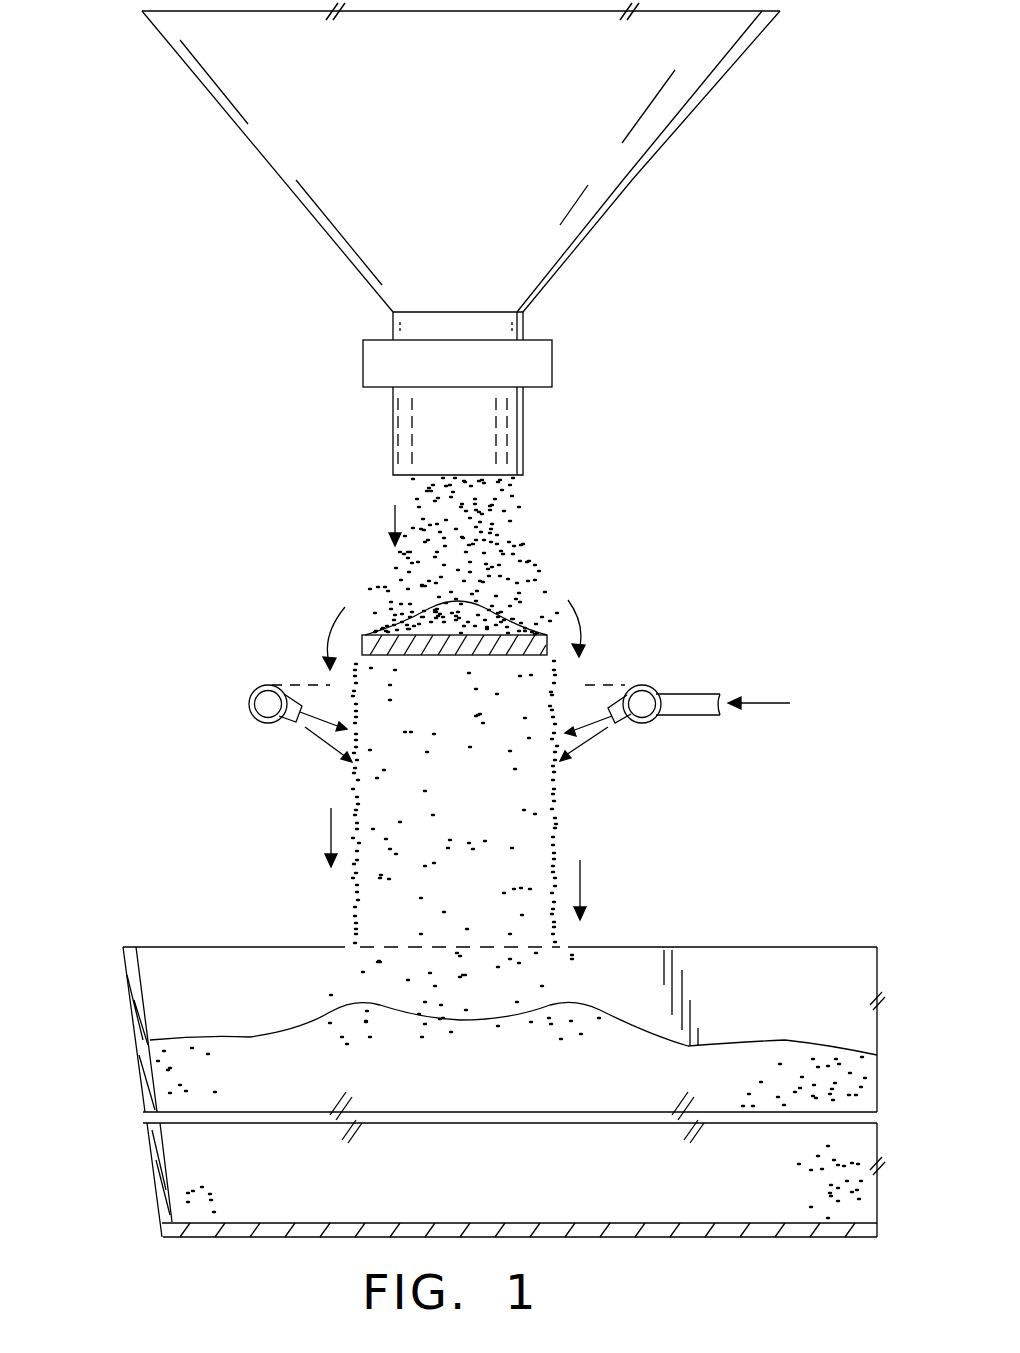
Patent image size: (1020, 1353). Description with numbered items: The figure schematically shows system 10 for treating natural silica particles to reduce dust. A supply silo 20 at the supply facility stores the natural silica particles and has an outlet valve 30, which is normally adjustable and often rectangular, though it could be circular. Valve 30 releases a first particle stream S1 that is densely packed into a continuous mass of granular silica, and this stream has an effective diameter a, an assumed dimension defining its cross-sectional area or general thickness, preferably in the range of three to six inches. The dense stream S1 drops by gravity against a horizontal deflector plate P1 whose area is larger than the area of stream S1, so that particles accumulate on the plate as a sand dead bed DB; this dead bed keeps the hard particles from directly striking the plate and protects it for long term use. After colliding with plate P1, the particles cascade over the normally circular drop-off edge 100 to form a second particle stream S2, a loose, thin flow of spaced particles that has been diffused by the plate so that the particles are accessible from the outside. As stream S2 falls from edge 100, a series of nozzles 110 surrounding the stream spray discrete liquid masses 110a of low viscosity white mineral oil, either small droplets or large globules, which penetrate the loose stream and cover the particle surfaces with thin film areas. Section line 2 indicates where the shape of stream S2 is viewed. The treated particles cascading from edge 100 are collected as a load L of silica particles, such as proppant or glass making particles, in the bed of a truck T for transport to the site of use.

The system 10 is at (815, 165).
The supply silo 20 is at (638, 172).
The outlet valve 30 is at (540, 360).
The effective diameter a is at (310, 492).
The first particle stream S1 is at (499, 549).
The sand dead bed DB is at (492, 610).
The drop-off edge 100 is at (580, 631).
The horizontal deflector plate P1 is at (448, 656).
The nozzles 110 is at (282, 718).
The discrete liquid masses 110a is at (317, 733).
The second particle stream S2 is at (565, 806).
The section line 2- 2 is at (638, 891).
The truck T is at (128, 1015).
The load L is at (705, 1055).